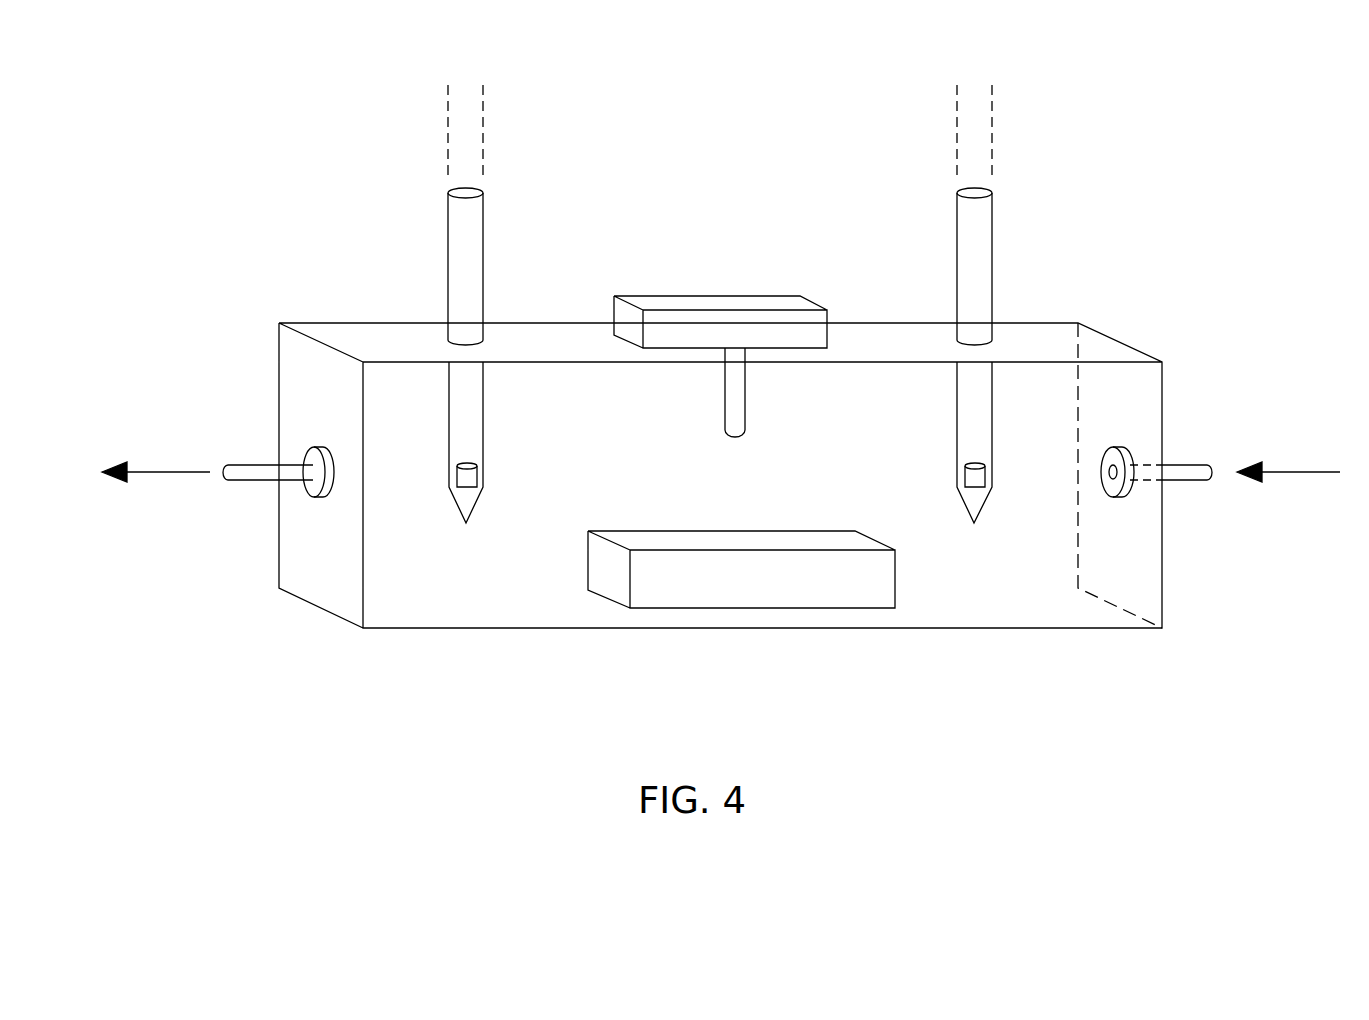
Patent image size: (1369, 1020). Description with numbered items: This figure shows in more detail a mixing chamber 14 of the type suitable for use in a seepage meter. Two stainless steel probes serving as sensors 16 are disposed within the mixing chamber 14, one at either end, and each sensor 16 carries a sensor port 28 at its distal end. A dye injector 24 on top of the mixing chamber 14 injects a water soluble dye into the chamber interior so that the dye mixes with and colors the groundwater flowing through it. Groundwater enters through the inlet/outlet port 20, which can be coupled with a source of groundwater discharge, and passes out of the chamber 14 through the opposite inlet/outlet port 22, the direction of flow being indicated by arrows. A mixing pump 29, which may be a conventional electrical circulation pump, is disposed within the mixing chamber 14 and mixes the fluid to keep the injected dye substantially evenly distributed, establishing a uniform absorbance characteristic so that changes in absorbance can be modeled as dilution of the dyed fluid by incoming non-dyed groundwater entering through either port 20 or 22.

The mixing chamber 14 is at (1130, 352).
The sensors 16 is at (477, 228).
The inlet/outlet port 20 is at (1188, 477).
The inlet/outlet port 22 is at (252, 477).
The dye injector 24 is at (712, 300).
The sensor ports 28 is at (482, 433).
The mixing pump 29 is at (837, 603).